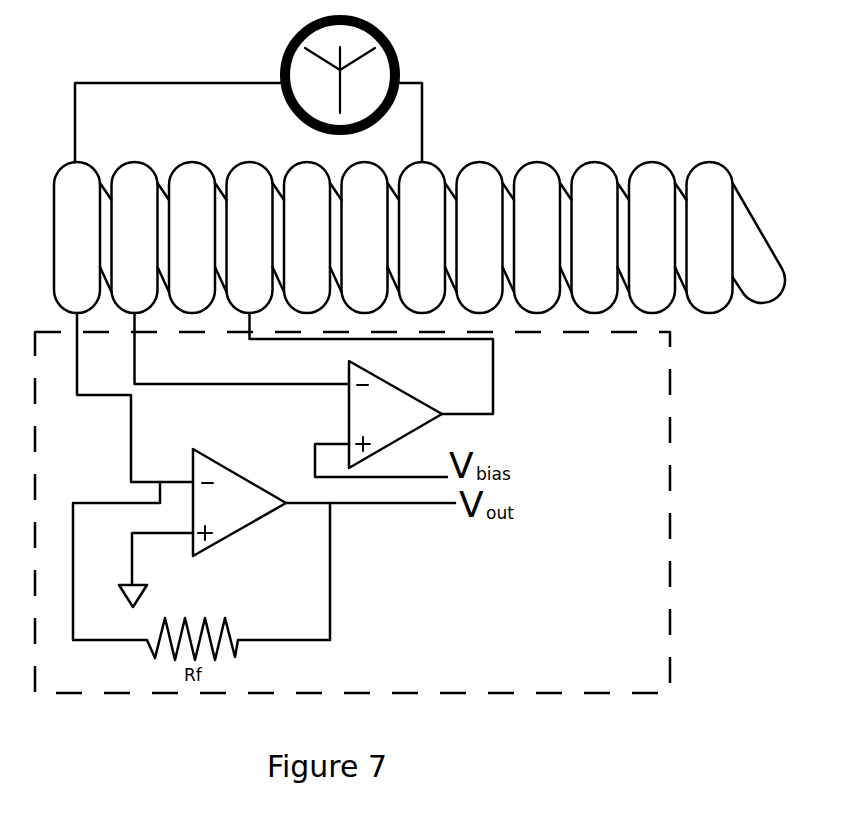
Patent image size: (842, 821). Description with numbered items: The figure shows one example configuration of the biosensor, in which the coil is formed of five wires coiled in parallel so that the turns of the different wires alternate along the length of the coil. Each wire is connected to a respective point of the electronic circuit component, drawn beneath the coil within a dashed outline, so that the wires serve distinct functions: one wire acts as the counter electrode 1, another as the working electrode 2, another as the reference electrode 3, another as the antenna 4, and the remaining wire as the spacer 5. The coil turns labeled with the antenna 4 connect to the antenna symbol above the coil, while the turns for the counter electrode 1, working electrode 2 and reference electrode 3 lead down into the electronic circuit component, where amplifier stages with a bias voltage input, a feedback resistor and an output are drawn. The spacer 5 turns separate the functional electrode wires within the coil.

The counter electrode 1 is at (537, 237).
The working electrode 2 is at (307, 237).
The reference electrode 3 is at (422, 237).
The antenna 4 is at (249, 237).
The spacer 5 is at (422, 237).